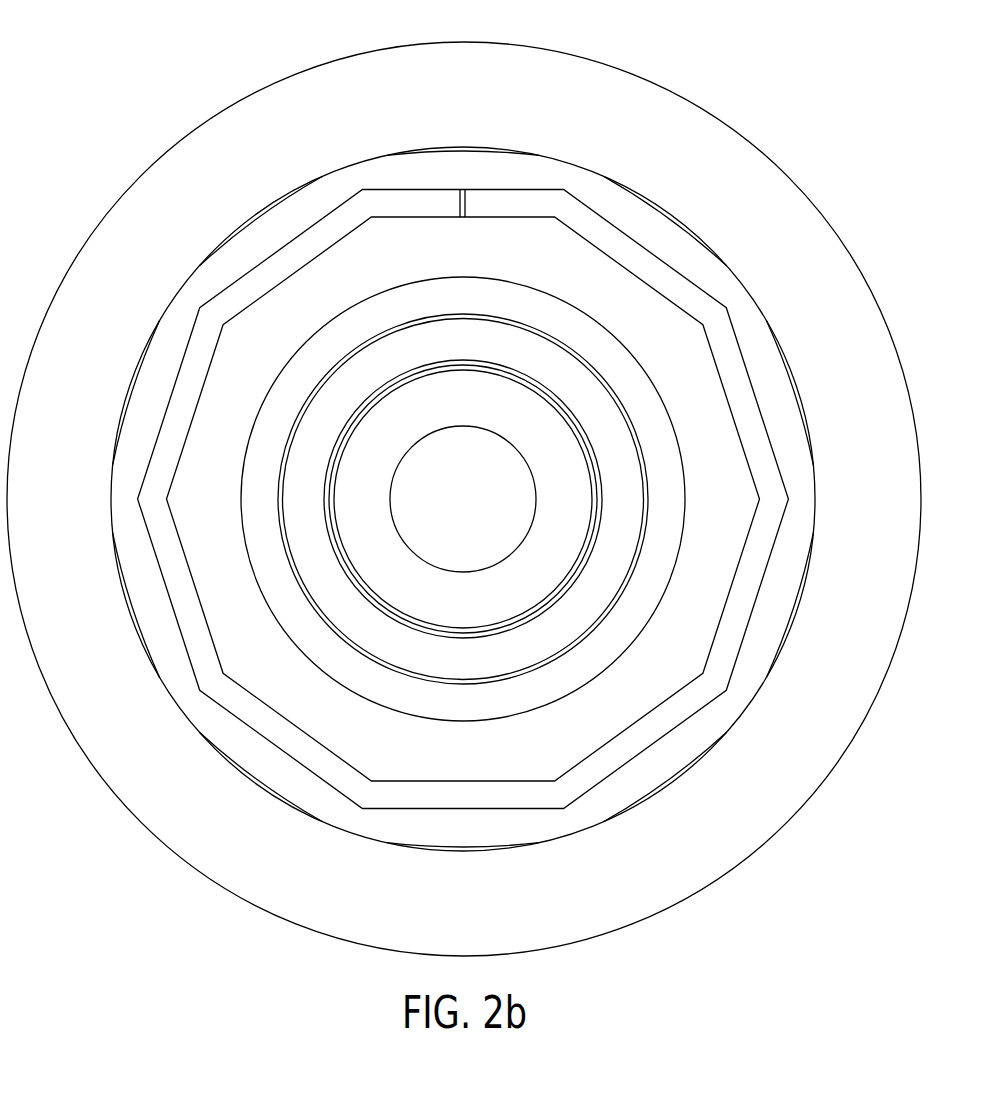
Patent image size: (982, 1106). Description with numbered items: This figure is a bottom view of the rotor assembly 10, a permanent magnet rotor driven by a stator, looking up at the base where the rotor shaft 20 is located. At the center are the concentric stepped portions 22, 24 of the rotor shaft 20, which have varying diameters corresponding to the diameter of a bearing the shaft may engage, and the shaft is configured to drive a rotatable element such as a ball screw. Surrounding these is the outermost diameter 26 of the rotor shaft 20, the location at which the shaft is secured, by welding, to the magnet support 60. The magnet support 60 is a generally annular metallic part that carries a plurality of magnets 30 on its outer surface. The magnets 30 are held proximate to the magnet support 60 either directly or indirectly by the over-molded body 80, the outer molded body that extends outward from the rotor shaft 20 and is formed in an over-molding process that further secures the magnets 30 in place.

The rotor assembly 10 is at (82, 90).
The over-molded body 80 is at (82, 281).
The magnet support 60 is at (643, 265).
The magnets 30 is at (817, 443).
The outermost diameter 26 is at (355, 768).
The rotor shaft 20 is at (313, 717).
The stepped portion 24 is at (355, 615).
The stepped portion 22 is at (377, 548).